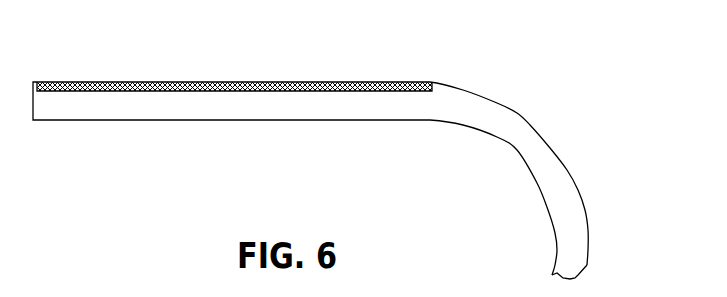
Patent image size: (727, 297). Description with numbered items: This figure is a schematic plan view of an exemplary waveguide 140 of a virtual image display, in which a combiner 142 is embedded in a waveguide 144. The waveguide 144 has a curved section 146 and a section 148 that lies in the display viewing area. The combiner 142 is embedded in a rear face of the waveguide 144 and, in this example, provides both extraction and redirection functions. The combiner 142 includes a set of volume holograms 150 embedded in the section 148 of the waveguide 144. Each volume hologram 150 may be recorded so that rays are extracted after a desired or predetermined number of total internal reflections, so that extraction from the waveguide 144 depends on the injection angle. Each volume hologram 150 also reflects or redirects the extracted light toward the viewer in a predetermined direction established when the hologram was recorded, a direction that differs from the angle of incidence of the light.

The waveguide 140 is at (478, 50).
The combiner 142 is at (373, 81).
The waveguide 144 is at (517, 110).
The curved section 146 is at (578, 190).
The section 148 is at (388, 110).
The volume holograms 150 is at (177, 81).